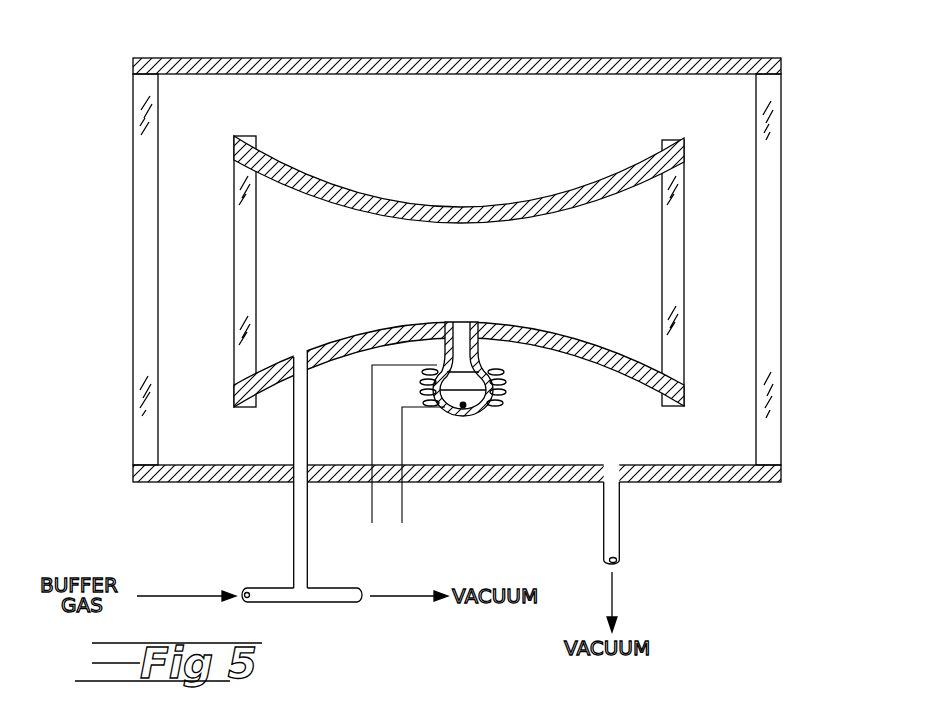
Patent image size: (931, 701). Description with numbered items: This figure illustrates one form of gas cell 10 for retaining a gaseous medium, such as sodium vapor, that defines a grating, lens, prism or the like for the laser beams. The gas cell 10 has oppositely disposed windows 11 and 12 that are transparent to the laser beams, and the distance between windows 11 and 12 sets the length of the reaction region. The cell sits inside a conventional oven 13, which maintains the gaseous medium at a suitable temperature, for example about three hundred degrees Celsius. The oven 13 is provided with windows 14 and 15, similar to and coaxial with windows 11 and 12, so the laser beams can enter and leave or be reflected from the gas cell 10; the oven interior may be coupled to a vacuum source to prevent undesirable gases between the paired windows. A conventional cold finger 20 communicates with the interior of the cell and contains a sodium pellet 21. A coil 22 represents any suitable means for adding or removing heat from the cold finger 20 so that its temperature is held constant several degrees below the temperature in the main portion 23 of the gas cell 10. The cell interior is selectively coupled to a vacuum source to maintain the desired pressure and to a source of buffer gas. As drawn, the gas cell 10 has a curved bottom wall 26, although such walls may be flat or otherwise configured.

The gas cell 10 is at (483, 177).
The window 11 is at (234, 185).
The window 12 is at (686, 200).
The oven 13 is at (570, 47).
The window 14 is at (133, 104).
The window 15 is at (782, 108).
The cold finger 20 is at (500, 378).
The sodium pellet 21 is at (470, 412).
The coil 22 is at (496, 400).
The main portion 23 is at (448, 285).
The bottom wall 26 is at (605, 364).